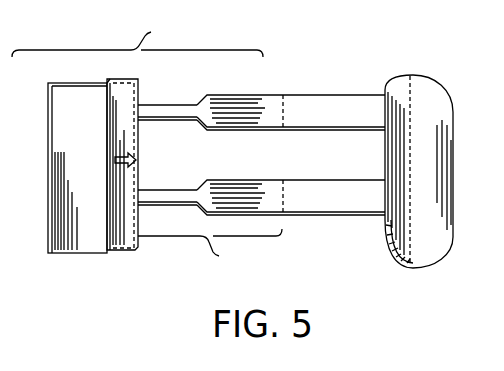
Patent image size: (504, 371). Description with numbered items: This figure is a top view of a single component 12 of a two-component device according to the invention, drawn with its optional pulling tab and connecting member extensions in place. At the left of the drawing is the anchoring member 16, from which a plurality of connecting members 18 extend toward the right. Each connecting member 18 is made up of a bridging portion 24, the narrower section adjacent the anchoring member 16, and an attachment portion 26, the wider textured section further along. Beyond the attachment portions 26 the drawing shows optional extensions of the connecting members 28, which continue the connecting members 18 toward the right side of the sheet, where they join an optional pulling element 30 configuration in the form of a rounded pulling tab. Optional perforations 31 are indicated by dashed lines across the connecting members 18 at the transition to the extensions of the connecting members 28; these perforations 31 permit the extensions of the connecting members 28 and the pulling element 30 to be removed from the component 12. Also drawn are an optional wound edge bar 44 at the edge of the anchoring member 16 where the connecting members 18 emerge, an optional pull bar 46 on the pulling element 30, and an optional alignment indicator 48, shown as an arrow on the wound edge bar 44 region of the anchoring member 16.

The single component 12 is at (137, 35).
The anchoring member 16 is at (62, 143).
The connecting members 18 is at (210, 255).
The bridging portion 24 is at (160, 107).
The attachment portion 26 is at (231, 112).
The extensions of connecting members 28 is at (348, 108).
The pulling element 30 is at (447, 142).
The perforations 31 is at (284, 100).
The wound edge bar 44 is at (128, 252).
The pull bar 46 is at (396, 78).
The alignment indicator 48 is at (137, 158).